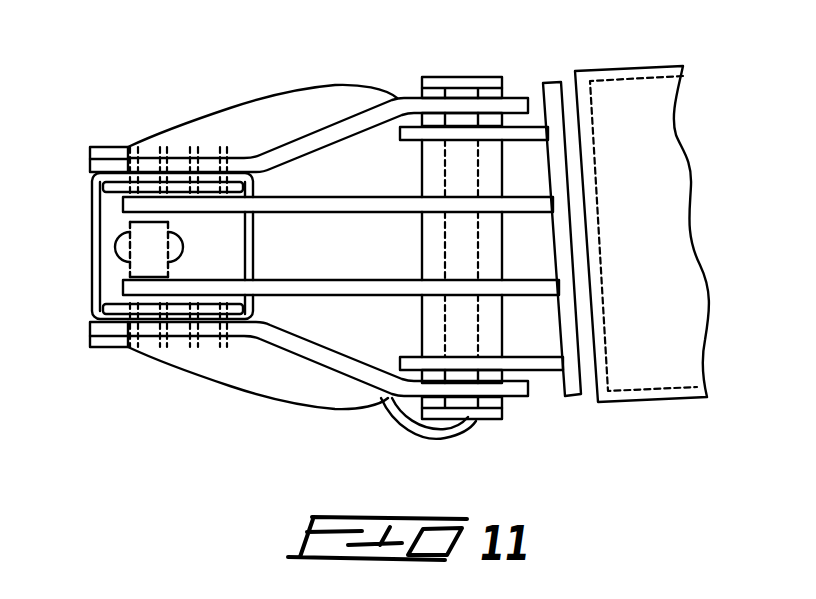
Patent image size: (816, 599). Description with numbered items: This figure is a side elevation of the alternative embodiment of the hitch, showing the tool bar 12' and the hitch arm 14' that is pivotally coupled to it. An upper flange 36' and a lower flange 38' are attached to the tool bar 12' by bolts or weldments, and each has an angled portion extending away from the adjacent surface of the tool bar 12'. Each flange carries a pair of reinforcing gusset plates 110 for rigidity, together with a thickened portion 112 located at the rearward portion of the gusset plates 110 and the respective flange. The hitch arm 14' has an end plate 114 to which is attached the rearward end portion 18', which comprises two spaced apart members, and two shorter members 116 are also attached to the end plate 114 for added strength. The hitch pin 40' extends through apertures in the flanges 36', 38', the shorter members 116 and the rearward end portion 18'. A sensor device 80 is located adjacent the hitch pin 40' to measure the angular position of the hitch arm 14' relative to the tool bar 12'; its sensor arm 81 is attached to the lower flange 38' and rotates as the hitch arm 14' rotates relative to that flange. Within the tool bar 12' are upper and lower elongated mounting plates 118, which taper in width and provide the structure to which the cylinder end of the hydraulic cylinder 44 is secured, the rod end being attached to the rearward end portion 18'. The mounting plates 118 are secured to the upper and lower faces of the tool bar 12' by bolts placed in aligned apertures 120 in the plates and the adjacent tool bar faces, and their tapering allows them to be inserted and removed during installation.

The tool bar 12' is at (141, 246).
The hitch arm 14' is at (642, 207).
The rearward end portion 18' is at (341, 246).
The upper flange 36' is at (328, 103).
The lower flange 38' is at (328, 386).
The hitch pin 40' is at (465, 62).
The hydraulic cylinder 44 is at (183, 246).
The sensor device 80 is at (503, 422).
The sensor arm 81 is at (412, 430).
The reinforcing gusset plates 110 is at (272, 107).
The thickened portion 112 is at (102, 150).
The end plate 114 is at (550, 88).
The shorter members 116 is at (402, 130).
The elongated mounting plates 118 is at (106, 187).
The apertures 120 is at (220, 150).